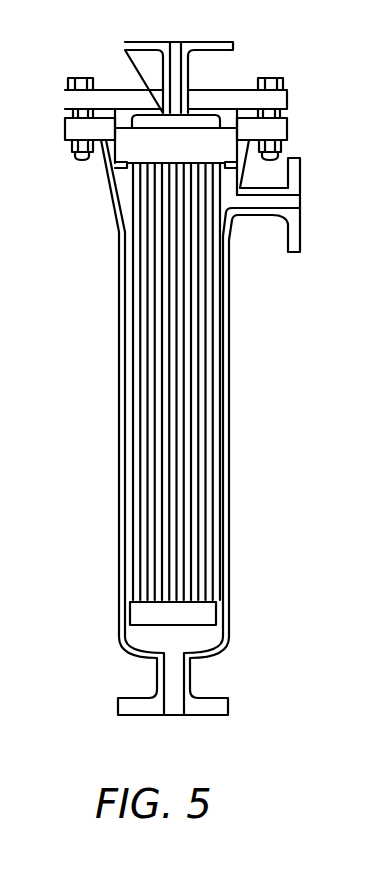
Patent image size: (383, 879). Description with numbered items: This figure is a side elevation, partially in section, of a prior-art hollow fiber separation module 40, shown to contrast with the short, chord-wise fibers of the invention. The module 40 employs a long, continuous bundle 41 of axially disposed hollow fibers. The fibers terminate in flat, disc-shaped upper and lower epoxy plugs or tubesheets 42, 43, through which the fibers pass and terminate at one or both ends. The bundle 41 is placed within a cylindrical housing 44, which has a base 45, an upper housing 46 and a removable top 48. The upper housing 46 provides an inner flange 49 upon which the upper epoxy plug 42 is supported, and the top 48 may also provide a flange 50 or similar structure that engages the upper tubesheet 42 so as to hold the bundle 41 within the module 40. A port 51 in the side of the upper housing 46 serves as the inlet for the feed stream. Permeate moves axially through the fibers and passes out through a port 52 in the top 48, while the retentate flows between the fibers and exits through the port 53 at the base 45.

The module 40 is at (110, 433).
The bundle 41 is at (183, 286).
The upper epoxy plug 42 is at (217, 142).
The lower epoxy plug 43 is at (192, 617).
The cylindrical housing 44 is at (232, 344).
The base 45 is at (215, 656).
The upper housing 46 is at (118, 208).
The removable top 48 is at (120, 97).
The inner flange 49 is at (116, 166).
The flange 50 is at (228, 116).
The port 51 is at (293, 237).
The port 52 is at (222, 45).
The port 53 is at (215, 705).